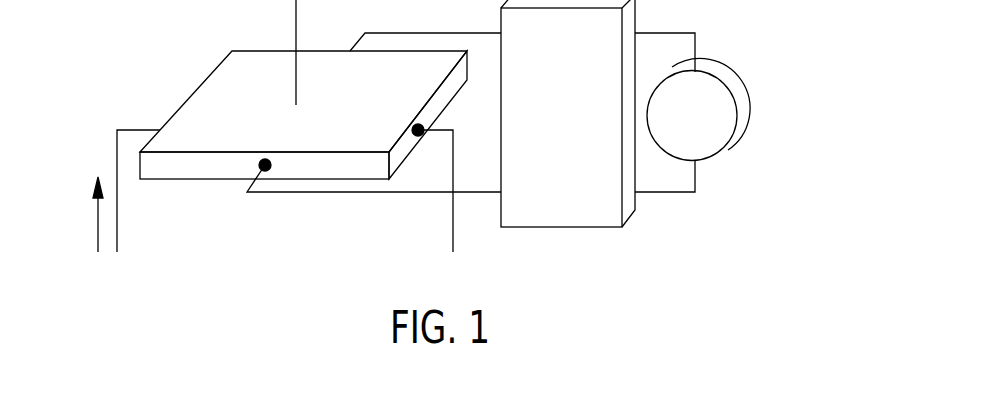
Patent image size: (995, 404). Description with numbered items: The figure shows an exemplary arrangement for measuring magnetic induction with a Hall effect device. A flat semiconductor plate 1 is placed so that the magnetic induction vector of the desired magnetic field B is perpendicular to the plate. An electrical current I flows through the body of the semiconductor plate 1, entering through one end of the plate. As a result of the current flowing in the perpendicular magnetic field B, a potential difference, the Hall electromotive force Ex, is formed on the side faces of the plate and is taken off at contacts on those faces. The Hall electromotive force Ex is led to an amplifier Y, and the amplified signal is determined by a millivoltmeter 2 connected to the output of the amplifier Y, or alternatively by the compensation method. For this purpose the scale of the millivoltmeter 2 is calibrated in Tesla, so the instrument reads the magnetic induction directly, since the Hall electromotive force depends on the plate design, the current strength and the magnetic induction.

The semiconductor plate 1 is at (238, 90).
The millivoltmeter 2 is at (719, 117).
The magnetic field B is at (283, 52).
The electrical current I is at (87, 214).
The Hall electromotive force Ex is at (432, 189).
The amplifier Y is at (568, 113).